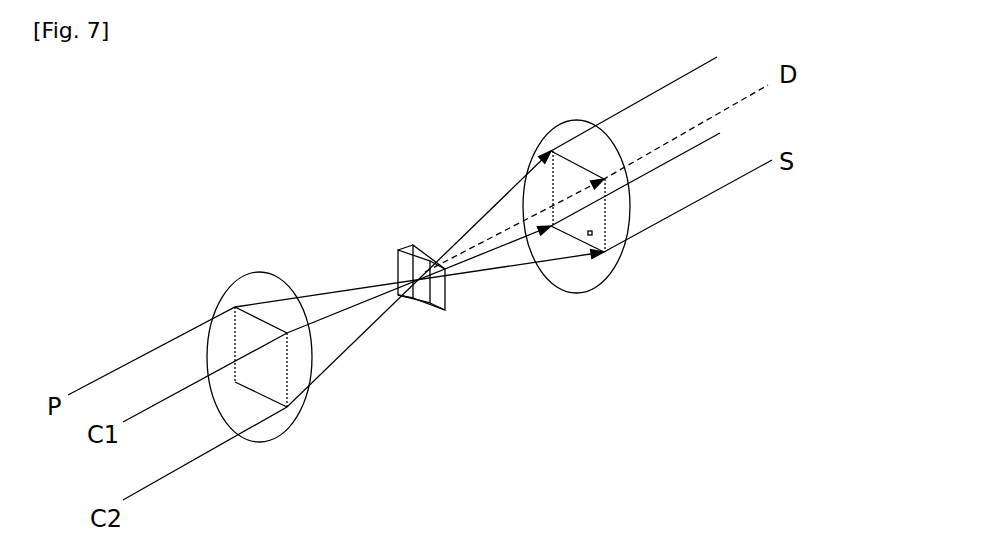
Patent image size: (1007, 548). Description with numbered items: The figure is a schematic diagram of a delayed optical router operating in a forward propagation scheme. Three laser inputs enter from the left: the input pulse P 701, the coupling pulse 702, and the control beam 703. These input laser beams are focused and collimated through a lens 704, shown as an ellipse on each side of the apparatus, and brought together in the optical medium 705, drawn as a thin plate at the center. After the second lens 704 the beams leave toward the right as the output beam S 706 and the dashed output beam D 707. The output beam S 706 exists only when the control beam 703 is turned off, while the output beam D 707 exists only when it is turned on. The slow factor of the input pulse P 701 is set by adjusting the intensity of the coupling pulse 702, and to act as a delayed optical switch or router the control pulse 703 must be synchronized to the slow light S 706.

The input pulse P 701 is at (152, 350).
The coupling pulse C1 702 is at (193, 383).
The control beam C2 703 is at (188, 463).
The lens 704 is at (303, 407).
The optical medium 705 is at (433, 313).
The output beam S 706 is at (670, 222).
The output beam D 707 is at (727, 110).